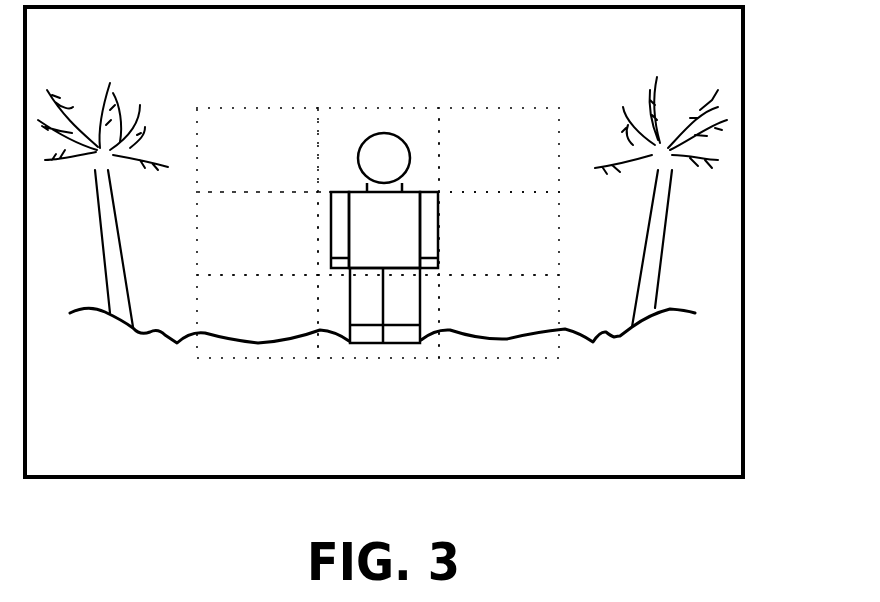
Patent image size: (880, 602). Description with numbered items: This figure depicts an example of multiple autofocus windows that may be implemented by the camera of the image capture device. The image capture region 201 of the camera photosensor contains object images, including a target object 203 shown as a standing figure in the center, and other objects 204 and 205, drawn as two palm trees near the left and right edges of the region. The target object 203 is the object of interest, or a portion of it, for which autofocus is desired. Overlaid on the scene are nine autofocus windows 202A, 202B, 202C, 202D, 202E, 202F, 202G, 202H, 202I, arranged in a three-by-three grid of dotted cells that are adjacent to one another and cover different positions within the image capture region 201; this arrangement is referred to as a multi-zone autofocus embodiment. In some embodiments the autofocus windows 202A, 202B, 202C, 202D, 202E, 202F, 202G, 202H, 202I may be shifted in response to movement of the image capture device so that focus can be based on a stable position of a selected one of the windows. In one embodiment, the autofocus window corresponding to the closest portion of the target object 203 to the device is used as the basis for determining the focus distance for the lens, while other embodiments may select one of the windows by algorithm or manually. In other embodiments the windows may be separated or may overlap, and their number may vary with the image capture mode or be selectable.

The image capture region 201 is at (747, 400).
The autofocus window 202A is at (248, 108).
The autofocus window 202B is at (423, 108).
The autofocus window 202C is at (532, 108).
The autofocus window 202D is at (197, 233).
The autofocus window 202E is at (317, 231).
The autofocus window 202F is at (560, 228).
The autofocus window 202G is at (258, 362).
The autofocus window 202H is at (407, 360).
The autofocus window 202I is at (542, 360).
The target object 203 is at (363, 140).
The other object 204 is at (110, 72).
The other object 205 is at (660, 77).